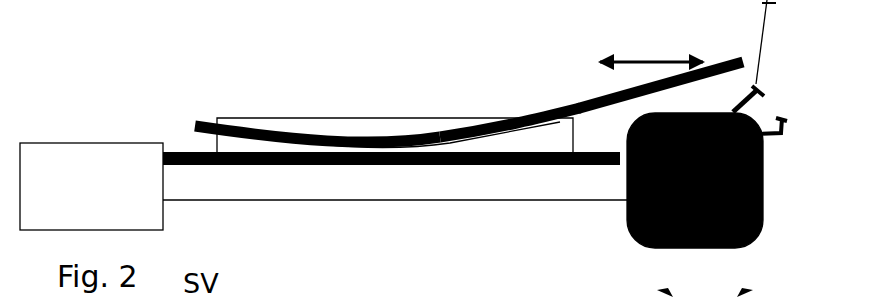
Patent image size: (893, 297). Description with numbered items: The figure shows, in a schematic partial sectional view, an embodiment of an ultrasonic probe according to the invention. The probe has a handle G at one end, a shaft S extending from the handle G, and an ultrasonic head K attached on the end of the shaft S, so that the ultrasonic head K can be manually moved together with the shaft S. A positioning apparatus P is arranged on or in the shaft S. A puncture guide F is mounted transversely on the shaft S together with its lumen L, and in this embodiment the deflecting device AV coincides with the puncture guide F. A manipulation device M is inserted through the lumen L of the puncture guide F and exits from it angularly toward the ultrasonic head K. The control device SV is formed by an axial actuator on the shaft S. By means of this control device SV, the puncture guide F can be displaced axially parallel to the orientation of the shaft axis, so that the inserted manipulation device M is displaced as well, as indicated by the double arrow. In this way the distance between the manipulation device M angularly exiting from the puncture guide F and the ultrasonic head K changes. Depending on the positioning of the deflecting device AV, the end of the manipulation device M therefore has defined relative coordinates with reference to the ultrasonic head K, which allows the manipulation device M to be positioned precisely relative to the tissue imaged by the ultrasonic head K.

The handle G is at (103, 153).
The control device SV is at (188, 152).
The shaft S is at (555, 192).
The positioning apparatus P is at (363, 107).
The deflecting device AV is at (490, 118).
The puncture guide F is at (262, 125).
The lumen L is at (437, 130).
The manipulation device M is at (593, 97).
The ultrasonic head K is at (735, 248).